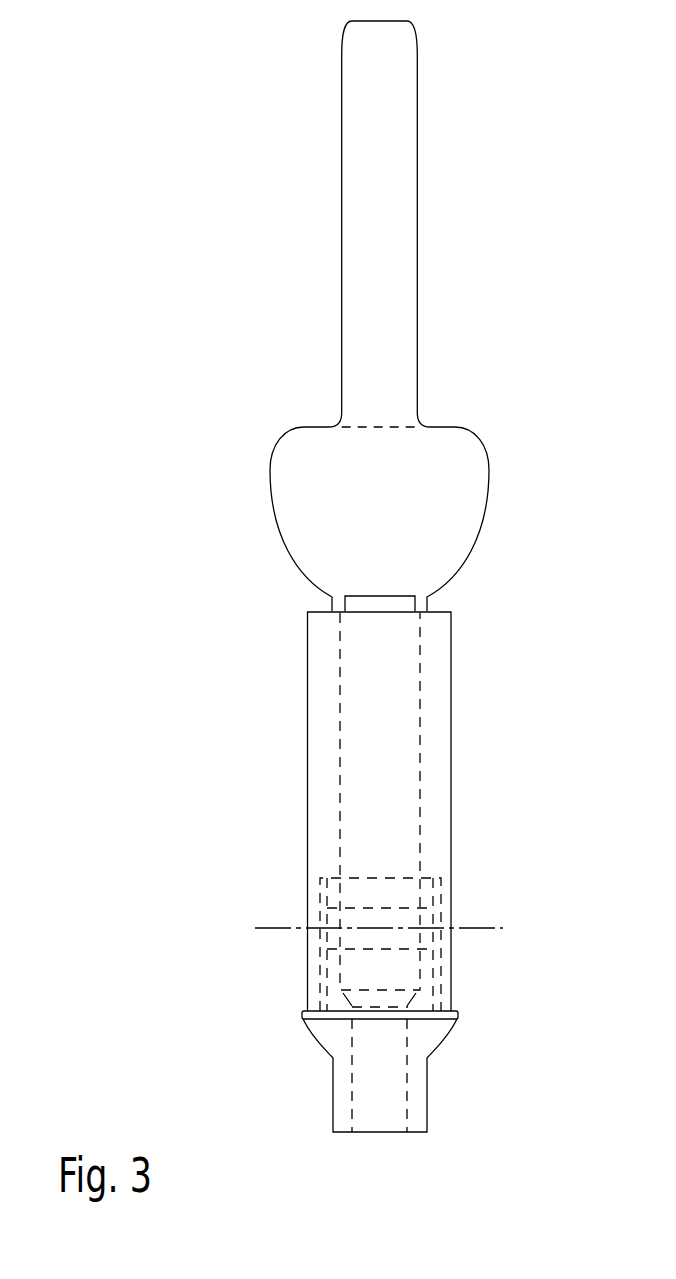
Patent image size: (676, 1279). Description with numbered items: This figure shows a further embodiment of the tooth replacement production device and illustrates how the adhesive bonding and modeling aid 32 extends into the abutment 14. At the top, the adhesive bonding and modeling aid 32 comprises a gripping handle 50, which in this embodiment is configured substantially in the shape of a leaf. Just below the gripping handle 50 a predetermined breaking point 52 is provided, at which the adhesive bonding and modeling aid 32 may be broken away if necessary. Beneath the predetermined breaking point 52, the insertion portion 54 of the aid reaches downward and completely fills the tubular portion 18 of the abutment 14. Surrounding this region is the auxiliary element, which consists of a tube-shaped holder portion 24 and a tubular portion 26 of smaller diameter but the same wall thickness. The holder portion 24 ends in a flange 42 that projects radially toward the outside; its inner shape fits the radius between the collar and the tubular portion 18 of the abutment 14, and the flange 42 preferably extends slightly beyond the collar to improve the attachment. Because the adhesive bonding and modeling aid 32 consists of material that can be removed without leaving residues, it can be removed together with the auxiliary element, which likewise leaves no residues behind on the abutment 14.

The adhesive bonding and modeling aid 32 is at (403, 292).
The gripping handle 50 is at (477, 480).
The predetermined breaking point 52 is at (418, 602).
The holder portion 24 is at (437, 682).
The insertion portion 54 is at (390, 757).
The tubular portion 26 is at (443, 903).
The tubular portion 18 is at (332, 893).
The flange 42 is at (445, 1008).
The abutment 14 is at (408, 1092).